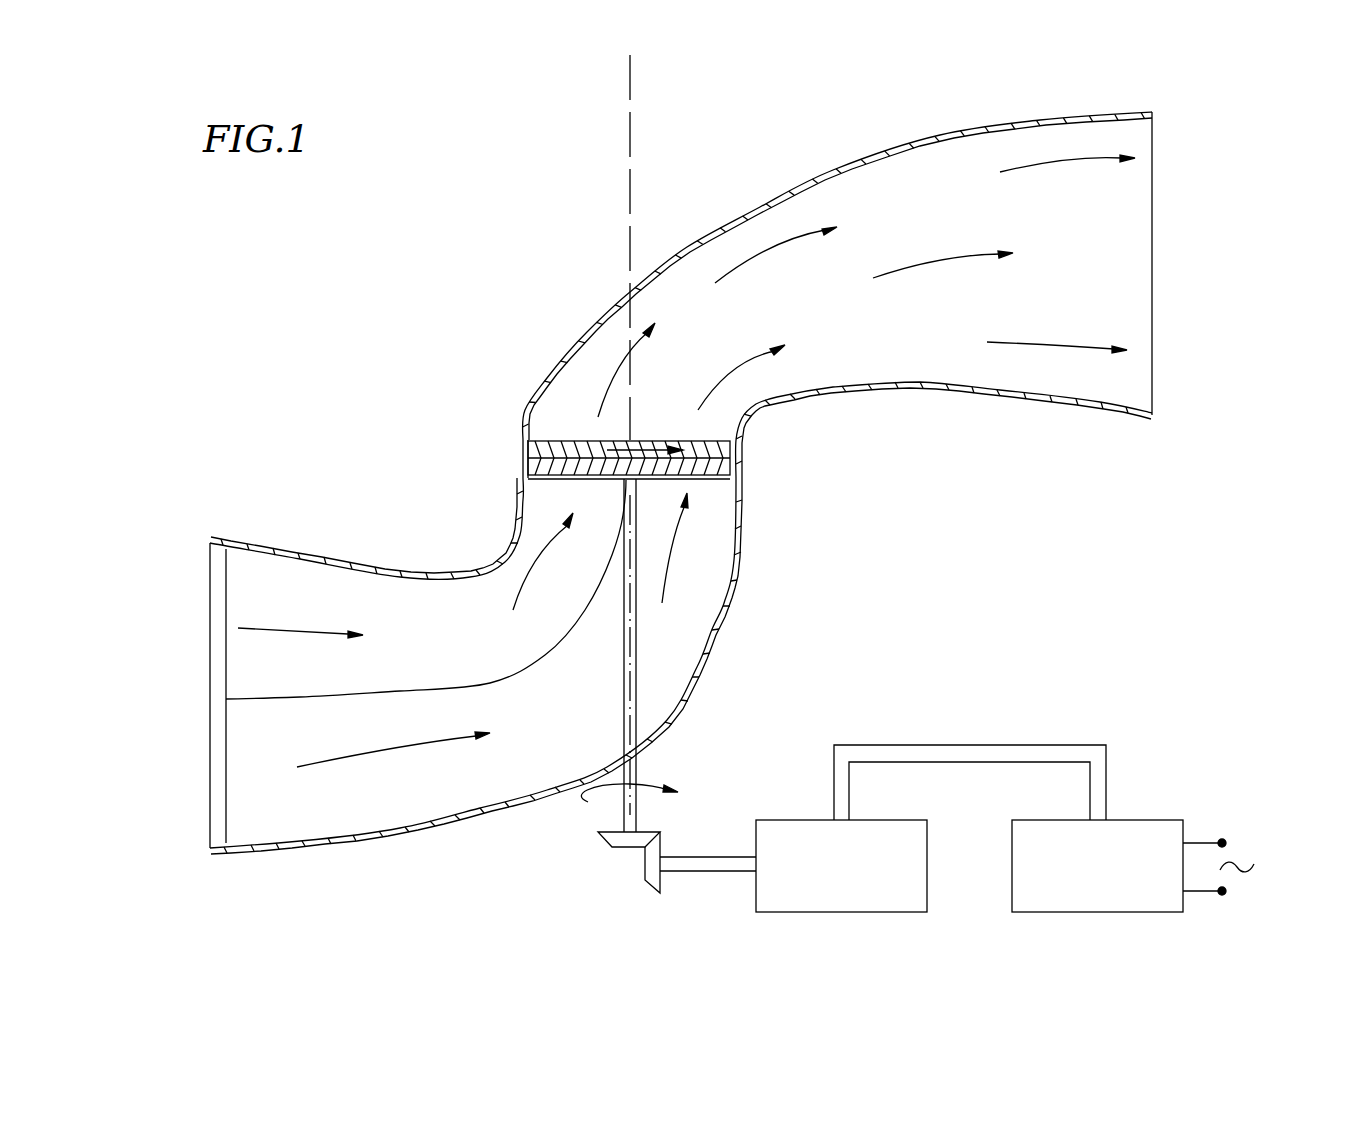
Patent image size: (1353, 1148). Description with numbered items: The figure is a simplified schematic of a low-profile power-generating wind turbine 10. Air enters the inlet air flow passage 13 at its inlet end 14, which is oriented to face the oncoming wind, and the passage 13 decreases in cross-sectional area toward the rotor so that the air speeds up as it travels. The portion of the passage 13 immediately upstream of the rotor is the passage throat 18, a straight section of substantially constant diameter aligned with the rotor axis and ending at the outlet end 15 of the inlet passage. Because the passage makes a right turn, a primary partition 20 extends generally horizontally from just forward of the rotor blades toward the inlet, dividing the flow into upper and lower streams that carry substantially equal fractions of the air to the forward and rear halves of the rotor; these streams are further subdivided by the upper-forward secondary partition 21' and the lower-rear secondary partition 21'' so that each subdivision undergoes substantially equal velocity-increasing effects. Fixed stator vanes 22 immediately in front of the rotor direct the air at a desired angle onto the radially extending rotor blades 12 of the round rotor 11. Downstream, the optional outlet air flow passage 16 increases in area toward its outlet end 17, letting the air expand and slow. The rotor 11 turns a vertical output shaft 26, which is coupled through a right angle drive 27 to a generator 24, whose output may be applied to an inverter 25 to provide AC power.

The wind turbine 10 is at (435, 338).
The rotor 11 is at (557, 448).
The rotor blades 12 is at (594, 447).
The inlet air flow passage 13 is at (380, 570).
The inlet end 14 is at (226, 699).
The outlet end 15 is at (728, 468).
The outlet air flow passage 16 is at (930, 130).
The outlet end 17 is at (1155, 222).
The passage throat 18 is at (520, 490).
The primary partition 20 is at (443, 689).
The upper-forward secondary partition 21' is at (249, 612).
The lower-rear secondary partition 21'' is at (312, 761).
The stator vanes 22 is at (677, 467).
The generator 24 is at (807, 820).
The inverter 25 is at (1133, 820).
The output shaft 26 is at (638, 677).
The right angle drive 27 is at (638, 852).